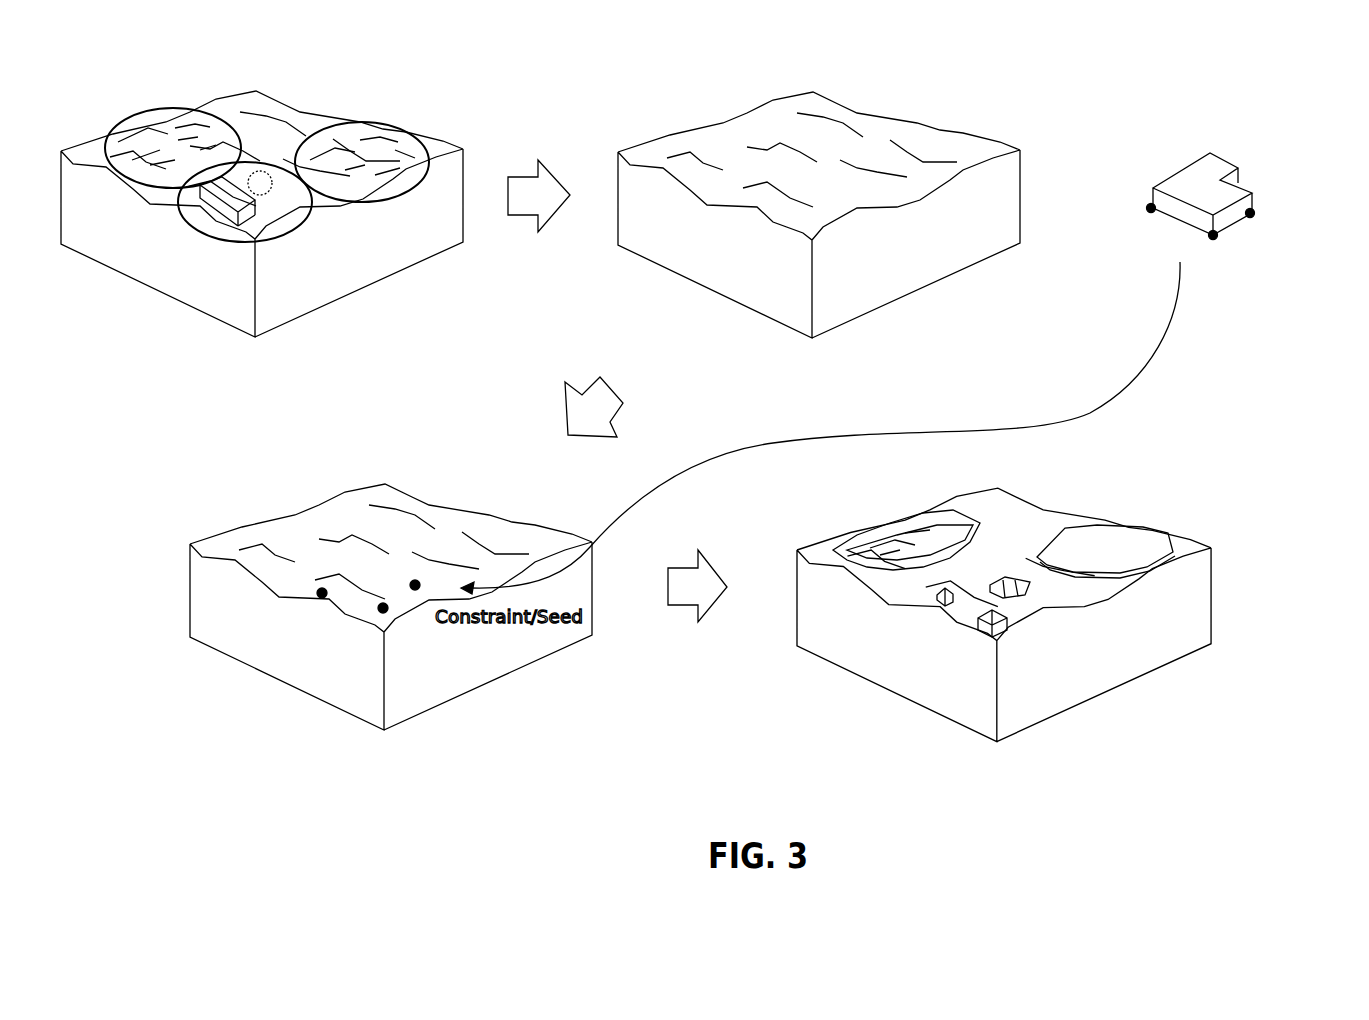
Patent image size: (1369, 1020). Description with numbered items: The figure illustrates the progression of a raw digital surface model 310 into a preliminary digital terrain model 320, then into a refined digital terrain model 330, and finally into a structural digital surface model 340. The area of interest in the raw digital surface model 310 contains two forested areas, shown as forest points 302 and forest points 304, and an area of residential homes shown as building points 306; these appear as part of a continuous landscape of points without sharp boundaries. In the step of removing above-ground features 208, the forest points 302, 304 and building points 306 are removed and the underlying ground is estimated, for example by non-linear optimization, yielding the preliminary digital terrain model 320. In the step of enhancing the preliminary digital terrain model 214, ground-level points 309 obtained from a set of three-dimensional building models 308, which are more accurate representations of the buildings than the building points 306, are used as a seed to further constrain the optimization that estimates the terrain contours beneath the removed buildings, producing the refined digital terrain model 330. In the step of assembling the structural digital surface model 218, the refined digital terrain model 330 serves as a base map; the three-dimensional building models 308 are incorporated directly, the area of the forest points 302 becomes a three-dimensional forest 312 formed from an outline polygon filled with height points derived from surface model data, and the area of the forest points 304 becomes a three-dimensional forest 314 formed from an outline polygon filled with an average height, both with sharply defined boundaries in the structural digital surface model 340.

The step of removing above-ground features 208 is at (553, 205).
The step of enhancing the preliminary digital terrain model 214 is at (608, 416).
The step of assembling the structural digital surface model 218 is at (713, 596).
The forest points 302 is at (205, 95).
The forest points 304 is at (453, 106).
The building points 306 is at (362, 273).
The 3D building models 308 is at (1130, 678).
The ground-level points 309 is at (1254, 236).
The raw digital surface model 310 is at (390, 375).
The 3D forest 312 is at (933, 501).
The 3D forest 314 is at (1195, 511).
The preliminary digital terrain model 320 is at (993, 376).
The refined digital terrain model 330 is at (550, 793).
The structural digital surface model 340 is at (1180, 793).